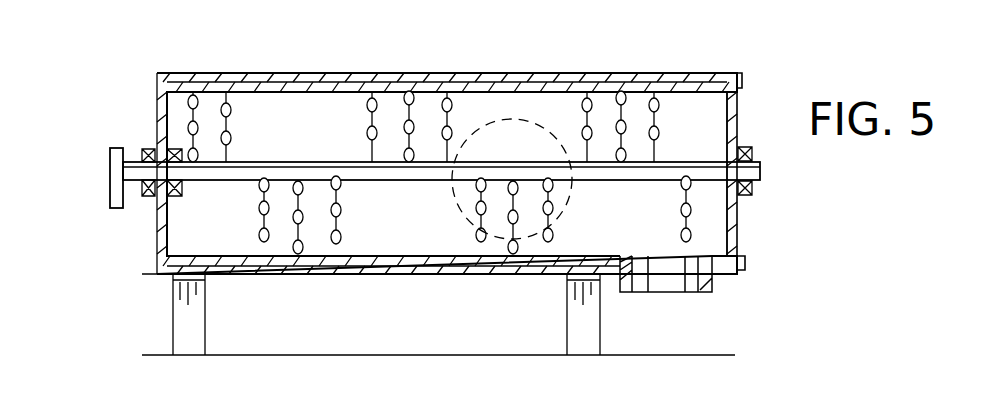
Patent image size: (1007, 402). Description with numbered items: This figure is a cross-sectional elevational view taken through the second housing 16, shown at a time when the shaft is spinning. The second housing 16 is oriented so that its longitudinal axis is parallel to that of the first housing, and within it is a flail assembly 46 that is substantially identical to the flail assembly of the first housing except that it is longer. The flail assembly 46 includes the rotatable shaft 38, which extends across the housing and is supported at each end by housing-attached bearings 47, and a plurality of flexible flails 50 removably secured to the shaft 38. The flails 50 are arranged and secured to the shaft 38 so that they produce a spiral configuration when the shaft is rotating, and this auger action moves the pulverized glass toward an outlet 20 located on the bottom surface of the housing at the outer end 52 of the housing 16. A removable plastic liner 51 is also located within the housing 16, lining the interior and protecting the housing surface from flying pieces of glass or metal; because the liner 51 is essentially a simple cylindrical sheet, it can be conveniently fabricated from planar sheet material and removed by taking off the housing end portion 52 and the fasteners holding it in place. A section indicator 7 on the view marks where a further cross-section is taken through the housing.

The second housing 16 is at (308, 80).
The removable plastic liner 51 is at (338, 92).
The outer end 52 is at (737, 220).
The outlet structure 20 is at (697, 296).
The flail assembly 46 is at (447, 167).
The rotatable shaft 38 is at (607, 172).
The bearings 47 is at (150, 148).
The flexible flails 50 is at (232, 137).
The section line 7 is at (512, 119).